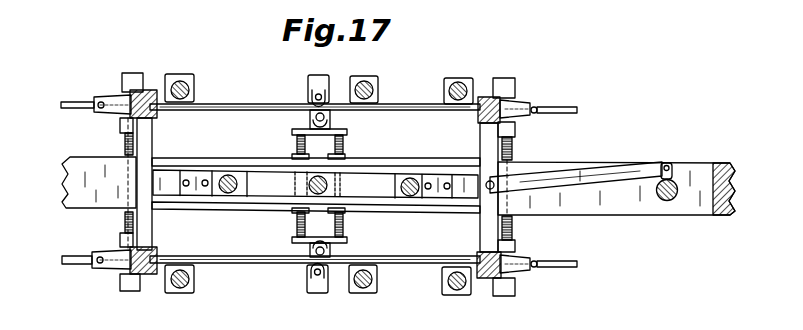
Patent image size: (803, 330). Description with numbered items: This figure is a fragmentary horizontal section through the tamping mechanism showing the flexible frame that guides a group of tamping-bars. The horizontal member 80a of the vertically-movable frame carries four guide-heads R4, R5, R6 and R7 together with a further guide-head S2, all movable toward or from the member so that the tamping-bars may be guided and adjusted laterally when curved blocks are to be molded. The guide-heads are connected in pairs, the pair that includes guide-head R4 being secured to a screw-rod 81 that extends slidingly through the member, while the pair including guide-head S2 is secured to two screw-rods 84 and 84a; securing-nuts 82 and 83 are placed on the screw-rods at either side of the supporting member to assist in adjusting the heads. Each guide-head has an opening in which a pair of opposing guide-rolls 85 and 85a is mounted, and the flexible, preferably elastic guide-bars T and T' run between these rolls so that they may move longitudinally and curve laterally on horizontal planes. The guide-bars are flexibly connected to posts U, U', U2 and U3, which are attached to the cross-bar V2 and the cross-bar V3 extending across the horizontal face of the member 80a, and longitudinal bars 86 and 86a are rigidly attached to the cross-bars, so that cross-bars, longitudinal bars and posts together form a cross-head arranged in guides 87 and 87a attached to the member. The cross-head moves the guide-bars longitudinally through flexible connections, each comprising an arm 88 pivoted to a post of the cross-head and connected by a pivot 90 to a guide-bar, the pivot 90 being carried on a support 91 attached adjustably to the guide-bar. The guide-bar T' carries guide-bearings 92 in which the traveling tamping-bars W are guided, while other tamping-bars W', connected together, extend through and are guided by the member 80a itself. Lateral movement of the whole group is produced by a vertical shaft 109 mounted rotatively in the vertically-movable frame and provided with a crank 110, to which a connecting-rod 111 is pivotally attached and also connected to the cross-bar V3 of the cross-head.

The arm 88 is at (112, 100).
The support 91 is at (75, 102).
The pivot 90 is at (100, 108).
The screw-rod 81 is at (125, 140).
The securing-nut 83 is at (308, 84).
The guide-head R6 is at (133, 73).
The post U2 is at (150, 92).
The guide-bar T' is at (315, 92).
The traveling tamping-bar W is at (363, 189).
The guide-bearing 92 is at (444, 86).
The post U3 is at (487, 97).
The guide-head R7 is at (515, 86).
The horizontal member 80a is at (68, 193).
The cross-bar V2 is at (153, 143).
The longitudinal bar 86 is at (218, 158).
The screw-rod 84 is at (292, 143).
The screw-rod 84a is at (347, 145).
The guide 87a is at (435, 175).
The connecting-rod 111 is at (570, 172).
The crank 110 is at (672, 166).
The securing-nut 82 is at (120, 212).
The guide 87 is at (205, 196).
The tamping-bar W' is at (223, 215).
The longitudinal bar 86a is at (370, 209).
The cross-bar V3 is at (480, 230).
The vertical shaft 109 is at (672, 201).
The guide-roll 85a is at (337, 253).
The guide-head R4 is at (120, 283).
The post U is at (143, 287).
The guide-bar T is at (315, 279).
The guide-roll 85 is at (305, 275).
The guide-head S2 is at (317, 293).
The post U' is at (483, 290).
The guide-head R5 is at (516, 290).